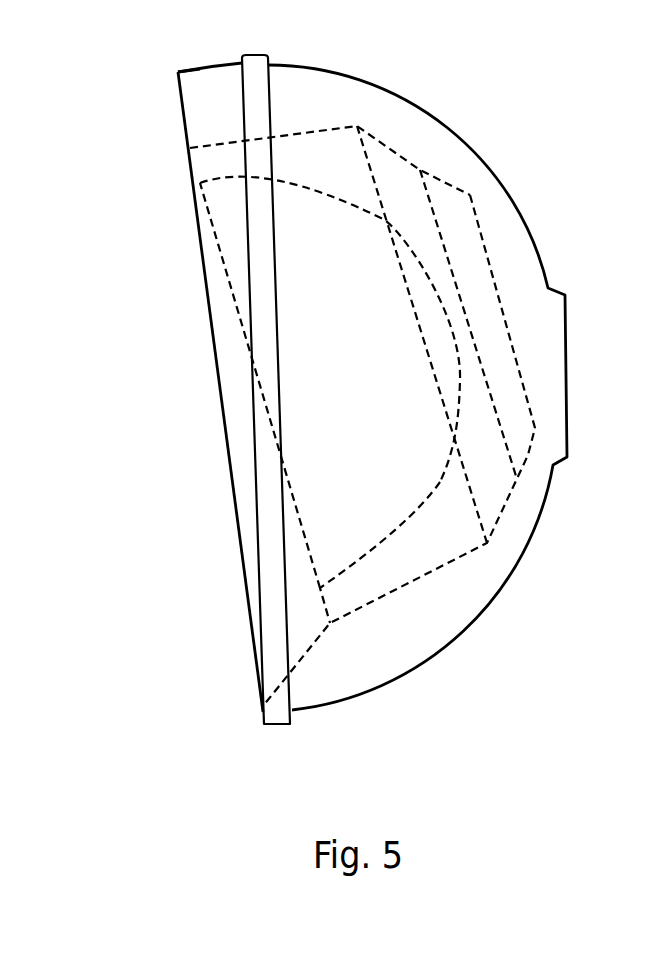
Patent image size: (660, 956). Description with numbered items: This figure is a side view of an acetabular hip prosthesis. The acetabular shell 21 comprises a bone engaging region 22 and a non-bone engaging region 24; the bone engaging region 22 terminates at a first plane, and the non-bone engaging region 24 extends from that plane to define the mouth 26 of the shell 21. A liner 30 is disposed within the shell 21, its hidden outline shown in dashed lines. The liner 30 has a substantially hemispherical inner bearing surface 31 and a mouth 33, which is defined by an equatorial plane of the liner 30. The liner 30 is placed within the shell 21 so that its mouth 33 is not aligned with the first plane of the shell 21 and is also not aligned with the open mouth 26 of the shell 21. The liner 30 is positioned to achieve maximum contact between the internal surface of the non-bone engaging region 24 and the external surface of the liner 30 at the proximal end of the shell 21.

The acetabular shell 21 is at (550, 200).
The bone engaging region 22 is at (448, 160).
The non-bone engaging region 24 is at (221, 307).
The mouth 26 is at (168, 122).
The liner 30 is at (333, 150).
The inner bearing surface 31 is at (432, 484).
The mouth 33 is at (308, 576).